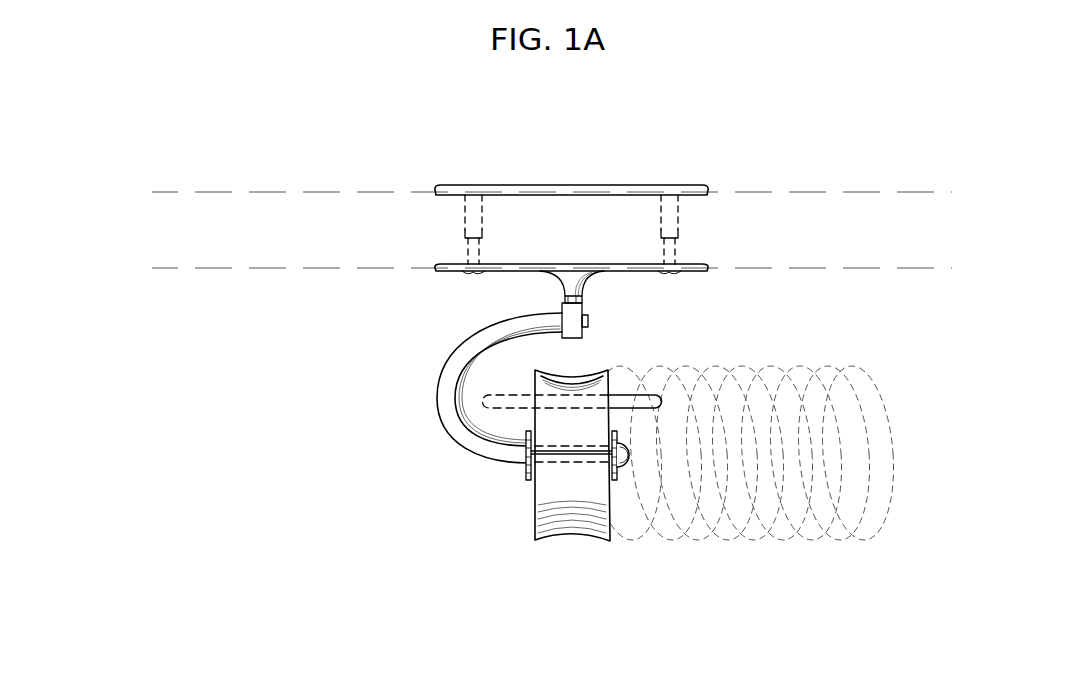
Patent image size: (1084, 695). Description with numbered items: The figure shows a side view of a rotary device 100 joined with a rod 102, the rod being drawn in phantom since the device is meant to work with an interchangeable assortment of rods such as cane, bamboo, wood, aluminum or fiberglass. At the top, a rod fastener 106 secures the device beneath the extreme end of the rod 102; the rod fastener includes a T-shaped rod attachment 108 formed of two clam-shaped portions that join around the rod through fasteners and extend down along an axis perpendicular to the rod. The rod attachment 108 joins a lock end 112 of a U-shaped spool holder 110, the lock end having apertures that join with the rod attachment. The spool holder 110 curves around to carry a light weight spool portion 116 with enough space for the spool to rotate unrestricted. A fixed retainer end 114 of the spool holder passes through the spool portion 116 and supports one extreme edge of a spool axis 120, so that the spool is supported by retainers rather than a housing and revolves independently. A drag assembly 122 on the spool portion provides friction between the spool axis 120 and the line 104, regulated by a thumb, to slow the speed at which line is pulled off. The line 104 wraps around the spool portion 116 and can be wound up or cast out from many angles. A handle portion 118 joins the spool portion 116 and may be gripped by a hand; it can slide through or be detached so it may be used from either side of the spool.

The rotary device 100 is at (258, 566).
The rod 102 is at (733, 191).
The line 104 is at (768, 538).
The rod fastener 106 is at (561, 292).
The T-shaped rod attachment 108 is at (665, 272).
The spool holder 110 is at (436, 400).
The lock end 112 is at (590, 321).
The fixed retainer end 114 is at (527, 463).
The spool portion 116 is at (562, 534).
The handle portion 118 is at (634, 393).
The spool axis 120 is at (572, 457).
The drag assembly 122 is at (627, 467).